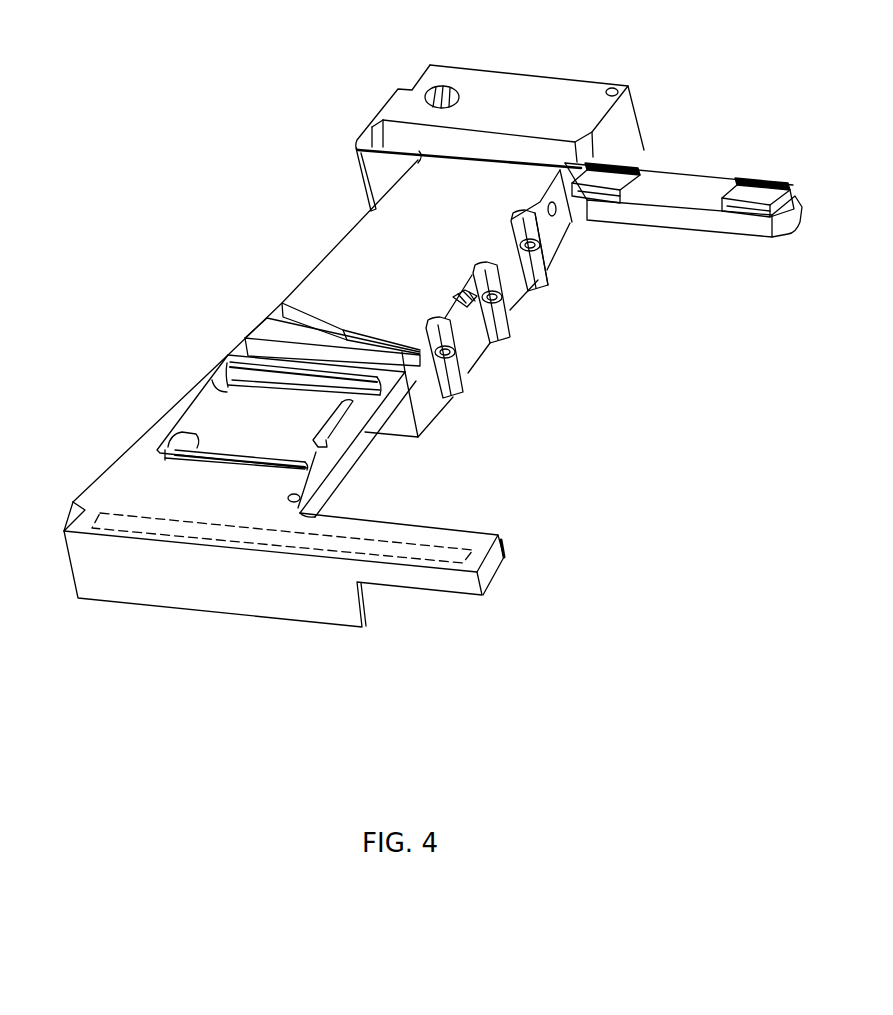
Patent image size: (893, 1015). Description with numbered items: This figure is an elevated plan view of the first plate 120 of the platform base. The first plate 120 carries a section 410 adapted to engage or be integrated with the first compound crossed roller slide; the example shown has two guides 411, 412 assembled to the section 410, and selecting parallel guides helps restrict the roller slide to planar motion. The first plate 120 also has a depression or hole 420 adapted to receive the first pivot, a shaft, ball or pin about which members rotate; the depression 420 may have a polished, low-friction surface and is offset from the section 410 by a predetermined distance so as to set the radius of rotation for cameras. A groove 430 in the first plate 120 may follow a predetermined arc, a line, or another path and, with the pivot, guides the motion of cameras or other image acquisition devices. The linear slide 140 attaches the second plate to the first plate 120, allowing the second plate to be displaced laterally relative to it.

The first plate 120 is at (157, 583).
The linear slide 140 is at (660, 193).
The section 410 is at (240, 440).
The guide 411 is at (360, 390).
The guide 412 is at (297, 470).
The depression or hole 420 is at (614, 90).
The groove 430 is at (310, 326).